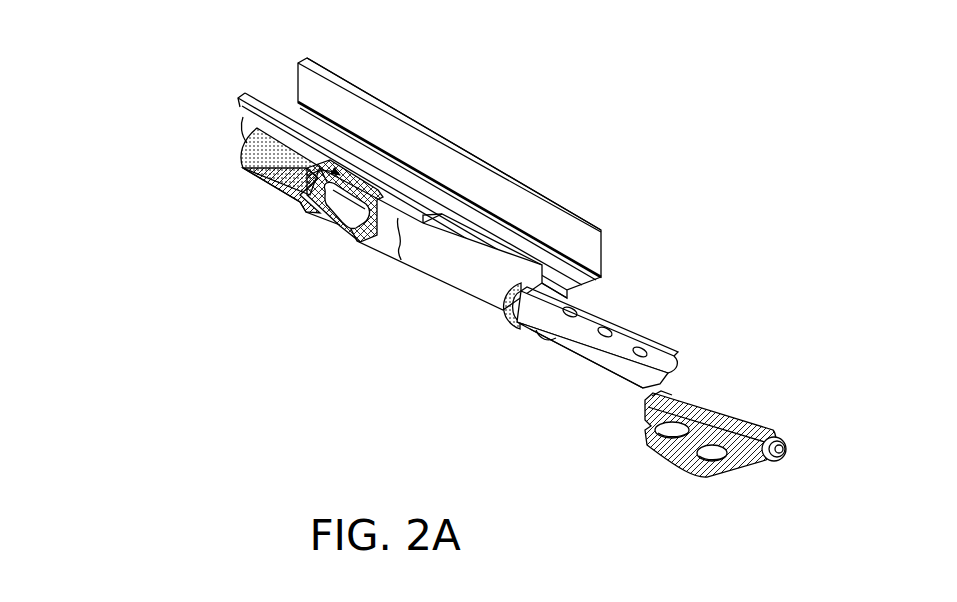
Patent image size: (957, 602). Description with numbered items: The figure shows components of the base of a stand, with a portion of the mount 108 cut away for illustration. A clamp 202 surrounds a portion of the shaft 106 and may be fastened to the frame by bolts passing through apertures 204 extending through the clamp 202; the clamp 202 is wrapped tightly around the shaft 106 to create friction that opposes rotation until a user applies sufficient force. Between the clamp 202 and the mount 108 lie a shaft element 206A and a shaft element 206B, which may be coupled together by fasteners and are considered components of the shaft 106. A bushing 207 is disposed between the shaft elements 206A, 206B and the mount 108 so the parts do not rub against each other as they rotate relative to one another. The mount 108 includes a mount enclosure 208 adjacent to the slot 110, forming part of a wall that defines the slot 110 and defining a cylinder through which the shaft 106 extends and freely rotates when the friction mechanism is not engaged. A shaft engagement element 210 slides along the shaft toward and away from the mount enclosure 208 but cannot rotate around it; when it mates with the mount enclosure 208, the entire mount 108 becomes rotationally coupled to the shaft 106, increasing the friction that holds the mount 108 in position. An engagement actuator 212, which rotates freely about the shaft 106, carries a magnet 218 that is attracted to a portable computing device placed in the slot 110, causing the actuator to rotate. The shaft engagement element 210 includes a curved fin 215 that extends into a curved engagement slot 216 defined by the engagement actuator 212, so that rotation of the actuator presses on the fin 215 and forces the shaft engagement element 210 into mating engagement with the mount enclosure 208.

The shaft 106 is at (783, 450).
The mount 108 is at (573, 210).
The slot 110 is at (298, 98).
The clamp 202 is at (743, 467).
The apertures 204 is at (703, 458).
The shaft element 206A is at (607, 377).
The shaft element 206B is at (627, 327).
The bushing 207 is at (512, 332).
The mount enclosure 208 is at (440, 288).
The shaft engagement element 210 is at (337, 228).
The engagement actuator 212 is at (243, 152).
The fin 215 is at (318, 163).
The engagement slot 216 is at (302, 192).
The magnet 218 is at (258, 183).